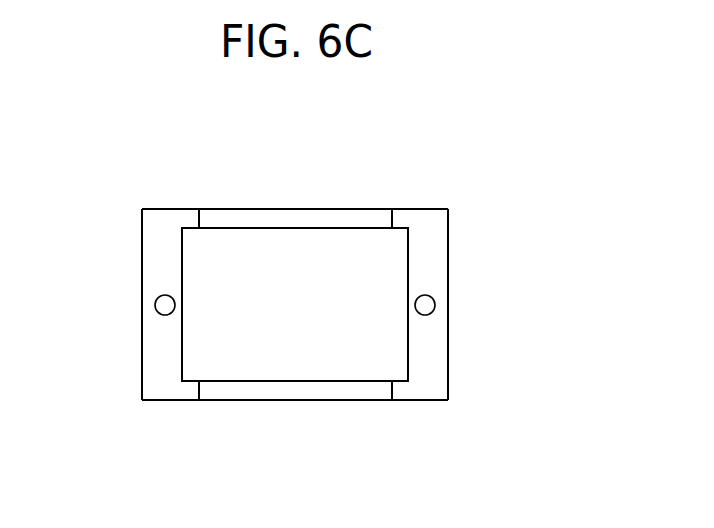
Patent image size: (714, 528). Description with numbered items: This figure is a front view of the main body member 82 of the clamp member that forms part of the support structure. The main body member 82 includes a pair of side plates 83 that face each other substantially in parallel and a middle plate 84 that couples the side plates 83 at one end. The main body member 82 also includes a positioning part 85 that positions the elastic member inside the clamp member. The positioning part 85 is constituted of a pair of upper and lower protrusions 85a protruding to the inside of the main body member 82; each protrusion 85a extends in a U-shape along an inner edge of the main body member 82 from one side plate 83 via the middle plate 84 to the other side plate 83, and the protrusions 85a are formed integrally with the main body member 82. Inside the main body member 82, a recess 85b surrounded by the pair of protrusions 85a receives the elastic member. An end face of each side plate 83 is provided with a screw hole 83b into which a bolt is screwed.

The main body member 82 is at (462, 230).
The side plate 83 is at (142, 265).
The screw hole 83b is at (165, 305).
The middle plate 84 is at (303, 247).
The positioning part 85 is at (229, 220).
The protrusion 85a is at (392, 218).
The recess 85b is at (367, 337).